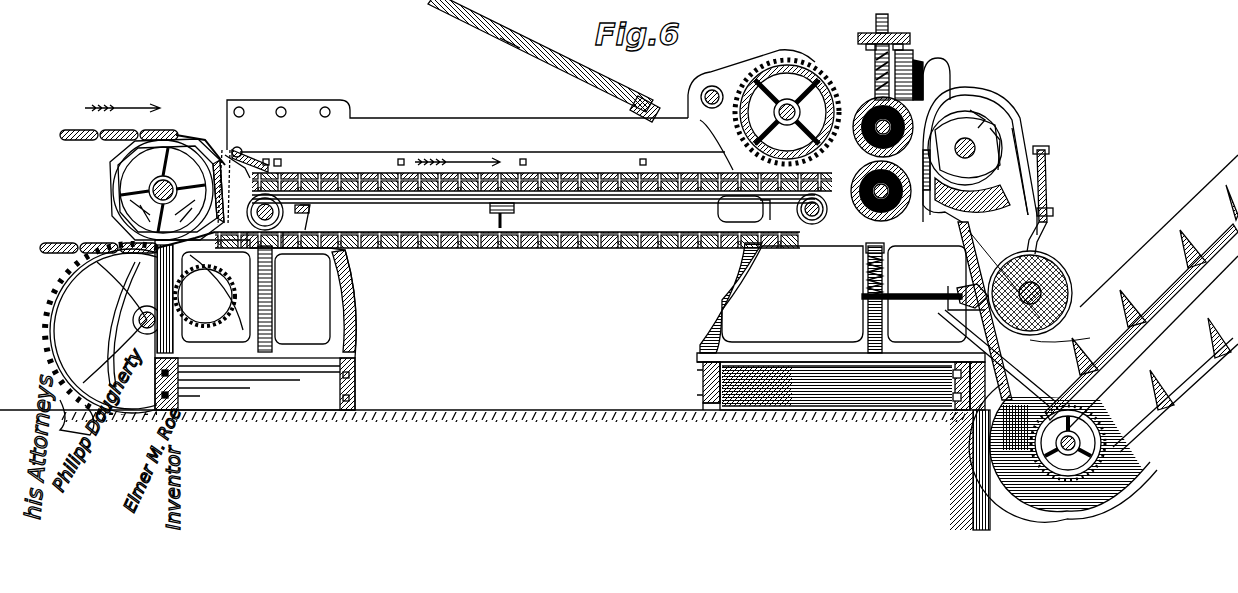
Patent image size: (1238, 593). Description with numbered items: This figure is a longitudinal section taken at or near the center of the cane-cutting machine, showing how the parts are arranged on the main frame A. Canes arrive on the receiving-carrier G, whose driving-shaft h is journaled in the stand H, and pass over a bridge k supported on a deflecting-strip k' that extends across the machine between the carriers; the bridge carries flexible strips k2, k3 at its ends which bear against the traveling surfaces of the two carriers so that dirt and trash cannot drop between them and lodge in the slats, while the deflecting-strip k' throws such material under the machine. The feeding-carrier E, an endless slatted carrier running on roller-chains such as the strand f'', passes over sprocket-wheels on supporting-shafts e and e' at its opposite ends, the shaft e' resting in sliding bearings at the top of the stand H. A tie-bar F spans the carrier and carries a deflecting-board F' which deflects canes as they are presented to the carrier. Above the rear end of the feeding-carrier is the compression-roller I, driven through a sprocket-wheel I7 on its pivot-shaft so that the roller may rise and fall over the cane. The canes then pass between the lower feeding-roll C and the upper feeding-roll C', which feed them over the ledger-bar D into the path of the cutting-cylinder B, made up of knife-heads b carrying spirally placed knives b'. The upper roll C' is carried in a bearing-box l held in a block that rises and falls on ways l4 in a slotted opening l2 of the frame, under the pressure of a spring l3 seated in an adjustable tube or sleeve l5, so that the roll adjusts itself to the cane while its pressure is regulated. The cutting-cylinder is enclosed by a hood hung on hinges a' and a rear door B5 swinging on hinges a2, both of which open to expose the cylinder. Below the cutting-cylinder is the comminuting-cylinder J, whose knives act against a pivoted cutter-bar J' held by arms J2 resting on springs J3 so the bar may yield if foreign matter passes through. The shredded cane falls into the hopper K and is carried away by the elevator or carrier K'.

The main frame A is at (718, 298).
The cutting-cylinder B is at (980, 161).
The rear door B5 is at (995, 115).
The knife-heads b is at (1021, 138).
The knives b' is at (992, 100).
The lower feeding-roll C is at (866, 217).
The upper feeding-roll C' is at (870, 94).
The ledger-bar D is at (942, 206).
The feeding-carrier E is at (523, 210).
The supporting-shaft e is at (808, 236).
The supporting-shaft e' is at (278, 233).
The tie-bar F is at (544, 61).
The deflecting-board F' is at (495, 50).
The strand of chain f'' is at (482, 145).
The receiving-carrier G is at (115, 190).
The driving-shaft h is at (150, 195).
The stand H is at (255, 325).
The compression-roller I is at (780, 70).
The sprocket-wheel I7 is at (711, 85).
The comminuting-cylinder J is at (1042, 290).
The cutter-bar J' is at (961, 284).
The extending arms J2 is at (915, 302).
The springs J3 is at (885, 275).
The hopper K is at (1047, 372).
The elevator or carrier K' is at (1141, 303).
The bridge k is at (146, 178).
The deflecting-strip k' is at (269, 147).
The flexible strip k2 is at (222, 150).
The flexible strip k3 is at (282, 163).
The bearing-box l is at (887, 30).
The slotted opening l2 is at (895, 58).
The spring l3 is at (905, 75).
The ways l4 is at (918, 85).
The adjustable tube or sleeve l5 is at (876, 26).
The hinges a' is at (946, 73).
The hinges a2 is at (1046, 152).